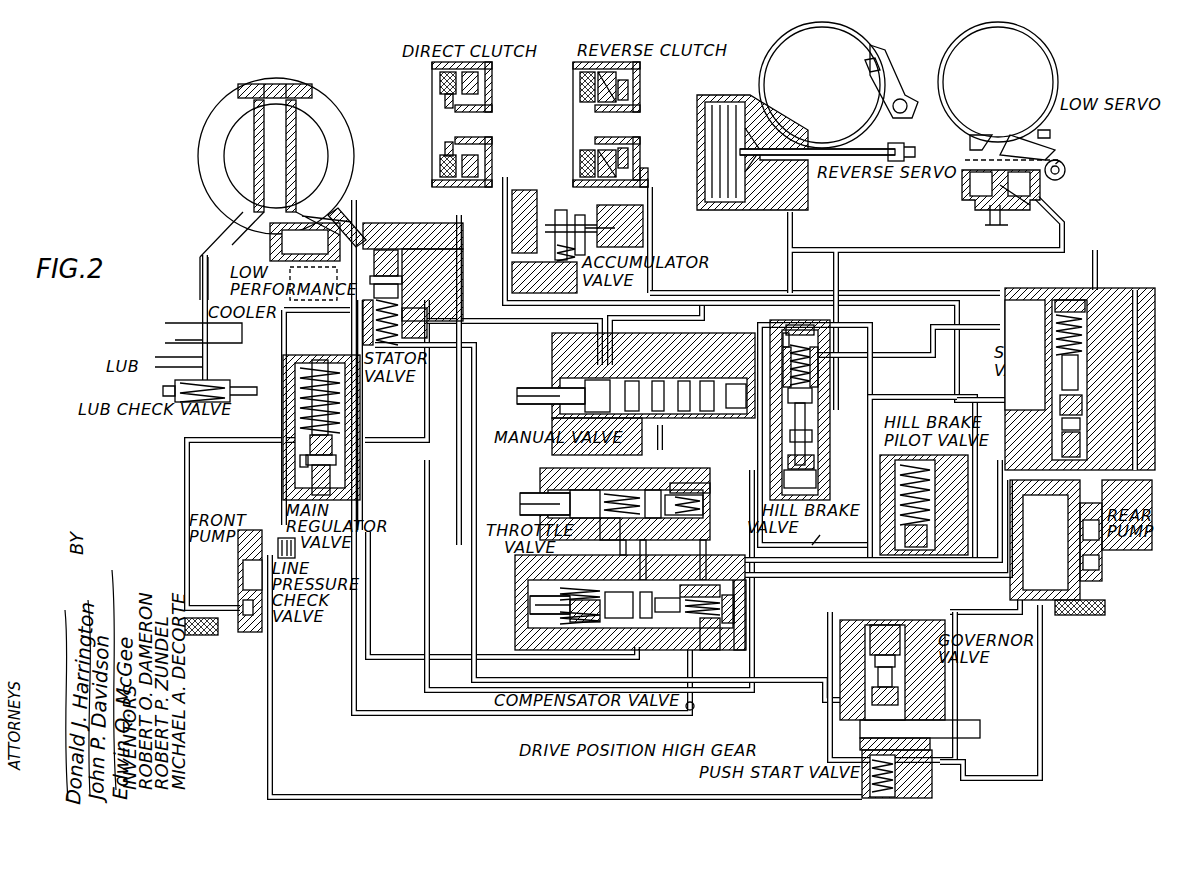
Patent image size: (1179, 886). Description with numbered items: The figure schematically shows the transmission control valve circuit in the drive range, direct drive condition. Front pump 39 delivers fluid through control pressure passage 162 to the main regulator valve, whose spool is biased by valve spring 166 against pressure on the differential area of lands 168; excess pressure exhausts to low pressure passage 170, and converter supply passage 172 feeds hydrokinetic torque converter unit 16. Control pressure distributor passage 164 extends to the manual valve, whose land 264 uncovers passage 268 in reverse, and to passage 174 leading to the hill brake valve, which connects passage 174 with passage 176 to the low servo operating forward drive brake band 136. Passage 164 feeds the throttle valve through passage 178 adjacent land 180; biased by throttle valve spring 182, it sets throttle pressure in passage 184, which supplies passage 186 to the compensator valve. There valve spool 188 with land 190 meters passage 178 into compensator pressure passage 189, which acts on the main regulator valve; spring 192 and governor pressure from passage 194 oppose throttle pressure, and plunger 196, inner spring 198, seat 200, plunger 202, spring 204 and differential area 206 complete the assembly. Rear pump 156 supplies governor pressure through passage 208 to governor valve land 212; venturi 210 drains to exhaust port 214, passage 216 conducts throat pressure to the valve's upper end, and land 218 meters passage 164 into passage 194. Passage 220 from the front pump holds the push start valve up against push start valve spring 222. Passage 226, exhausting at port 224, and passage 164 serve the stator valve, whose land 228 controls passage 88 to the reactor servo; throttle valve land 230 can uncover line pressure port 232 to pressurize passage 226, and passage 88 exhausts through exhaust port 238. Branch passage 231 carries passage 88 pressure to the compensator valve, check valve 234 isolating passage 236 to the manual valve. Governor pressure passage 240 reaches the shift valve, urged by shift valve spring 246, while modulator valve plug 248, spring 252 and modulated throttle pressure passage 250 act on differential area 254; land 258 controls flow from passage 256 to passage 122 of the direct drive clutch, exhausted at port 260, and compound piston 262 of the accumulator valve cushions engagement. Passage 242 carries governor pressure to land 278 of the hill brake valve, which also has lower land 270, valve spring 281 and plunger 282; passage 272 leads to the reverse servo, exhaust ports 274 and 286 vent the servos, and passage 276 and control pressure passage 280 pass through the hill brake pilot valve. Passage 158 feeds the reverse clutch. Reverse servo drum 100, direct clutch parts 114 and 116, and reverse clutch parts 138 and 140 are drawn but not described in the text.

The hydrokinetic torque converter unit 16 is at (354, 140).
The front pump 39 is at (238, 557).
The passage 88 is at (358, 228).
The reverse servo brake band drum 100 is at (858, 45).
The direct clutch piston 114 is at (440, 88).
The direct clutch plate 116 is at (440, 164).
The passage 122 is at (903, 292).
The forward drive brake band 136 is at (1045, 50).
The reverse clutch piston 138 is at (585, 82).
The reverse clutch plate 140 is at (590, 163).
The rear pump 156 is at (1102, 568).
The passage 158 is at (652, 205).
The control pressure passage 162 is at (285, 471).
The control pressure distributor passage 164 is at (513, 322).
The valve spring 166 is at (340, 377).
The adjacent valve lands 168 is at (330, 481).
The low pressure passage 170 is at (196, 440).
The converter supply passage 172 is at (290, 347).
The passage 174 is at (712, 323).
The passage 176 is at (842, 252).
The passage 178 is at (612, 547).
The throttle valve land 180 is at (650, 492).
The throttle valve spring 182 is at (690, 485).
The throttle pressure passage 184 is at (703, 562).
The passage 186 is at (990, 452).
The valve spool 188 is at (635, 605).
The compensator pressure passage 189 is at (414, 655).
The valve land 190 is at (630, 582).
The valve spring 192 is at (580, 624).
The governor pressure passage 194 is at (668, 640).
The valve plunger 196 is at (530, 605).
The inner valve spring 198 is at (580, 598).
The valve spring seat 200 is at (570, 586).
The valve plunger 202 is at (740, 625).
The valve spring 204 is at (735, 606).
The differential area 206 is at (695, 586).
The passage 208 is at (1045, 660).
The venturi section 210 is at (975, 760).
The governor valve land 212 is at (915, 703).
The exhaust port 214 is at (862, 760).
The passage 216 is at (935, 695).
The governor valve land 218 is at (905, 662).
The pressure passage 220 is at (442, 795).
The push start valve spring 222 is at (900, 762).
The exhaust port 224 is at (560, 492).
The passage 226 is at (462, 398).
The stator valve land 228 is at (398, 292).
The valve land 230 is at (605, 488).
The branch passage 231 is at (706, 634).
The line pressure port 232 is at (614, 528).
The shiftable check valve 234 is at (688, 710).
The passage 236 is at (690, 431).
The exhaust port 238 is at (400, 264).
The governor pressure passage 240 is at (1105, 290).
The passage 242 is at (935, 320).
The shift valve spring 246 is at (1083, 350).
The modulator valve plug 248 is at (1068, 448).
The modulated throttle pressure passage 250 is at (1130, 405).
The valve spring 252 is at (1072, 428).
The differential area 254 is at (1085, 306).
The passage 256 is at (690, 434).
The valve land 258 is at (1098, 412).
The exhaust port 260 is at (1085, 372).
The compound piston 262 is at (565, 212).
The valve land 264 is at (565, 404).
The passage 268 is at (750, 362).
The lower land 270 is at (790, 488).
The passage 272 is at (800, 322).
The exhaust port 274 is at (850, 390).
The passage 276 is at (826, 440).
The land 278 is at (782, 405).
The control pressure passage 280 is at (745, 272).
The valve spring 281 is at (761, 326).
The plunger 282 is at (782, 372).
The exhaust port 286 is at (820, 466).